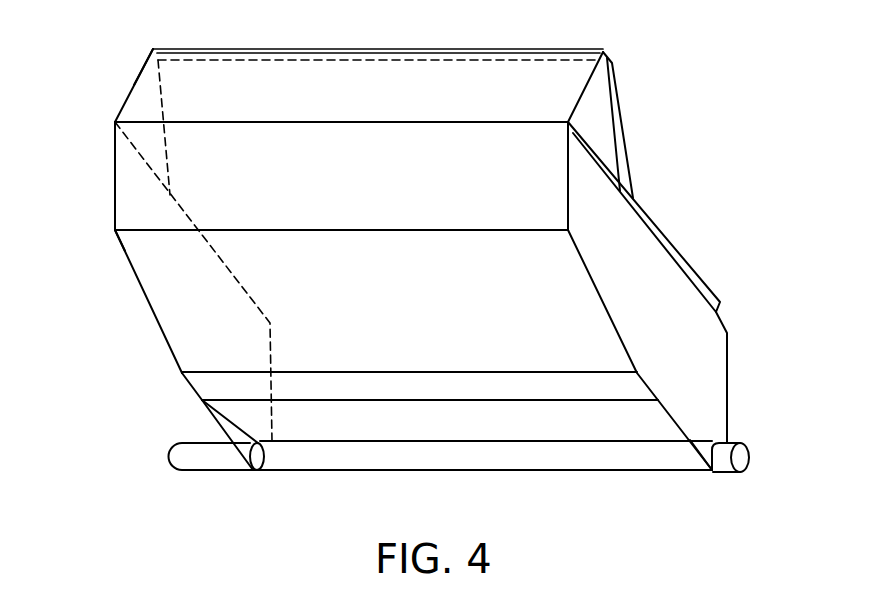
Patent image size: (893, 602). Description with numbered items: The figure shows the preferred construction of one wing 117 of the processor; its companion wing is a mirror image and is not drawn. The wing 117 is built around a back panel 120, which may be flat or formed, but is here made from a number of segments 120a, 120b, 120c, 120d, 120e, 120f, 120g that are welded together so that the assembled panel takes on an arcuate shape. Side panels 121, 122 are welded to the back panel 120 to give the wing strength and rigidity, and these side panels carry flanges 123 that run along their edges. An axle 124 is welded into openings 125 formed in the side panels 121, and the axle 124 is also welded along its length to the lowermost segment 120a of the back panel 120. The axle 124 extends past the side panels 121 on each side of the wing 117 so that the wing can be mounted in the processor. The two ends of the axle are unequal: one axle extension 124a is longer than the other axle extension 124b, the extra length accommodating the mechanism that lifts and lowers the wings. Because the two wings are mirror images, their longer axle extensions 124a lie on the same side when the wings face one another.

The wing 117 is at (655, 125).
The back panel 120 is at (165, 312).
The segment 120a is at (232, 419).
The segment 120b is at (193, 382).
The segment 120c is at (153, 282).
The segment 120d is at (128, 192).
The segment 120e is at (239, 67).
The segment 120f is at (156, 48).
The segment 120g is at (531, 62).
The side panel 121 is at (140, 242).
The side panel 122 is at (146, 90).
The flange 123 is at (627, 152).
The axle 124 is at (447, 455).
The axle extension 124a is at (192, 462).
The axle extension 124b is at (757, 423).
The opening 125 is at (257, 472).